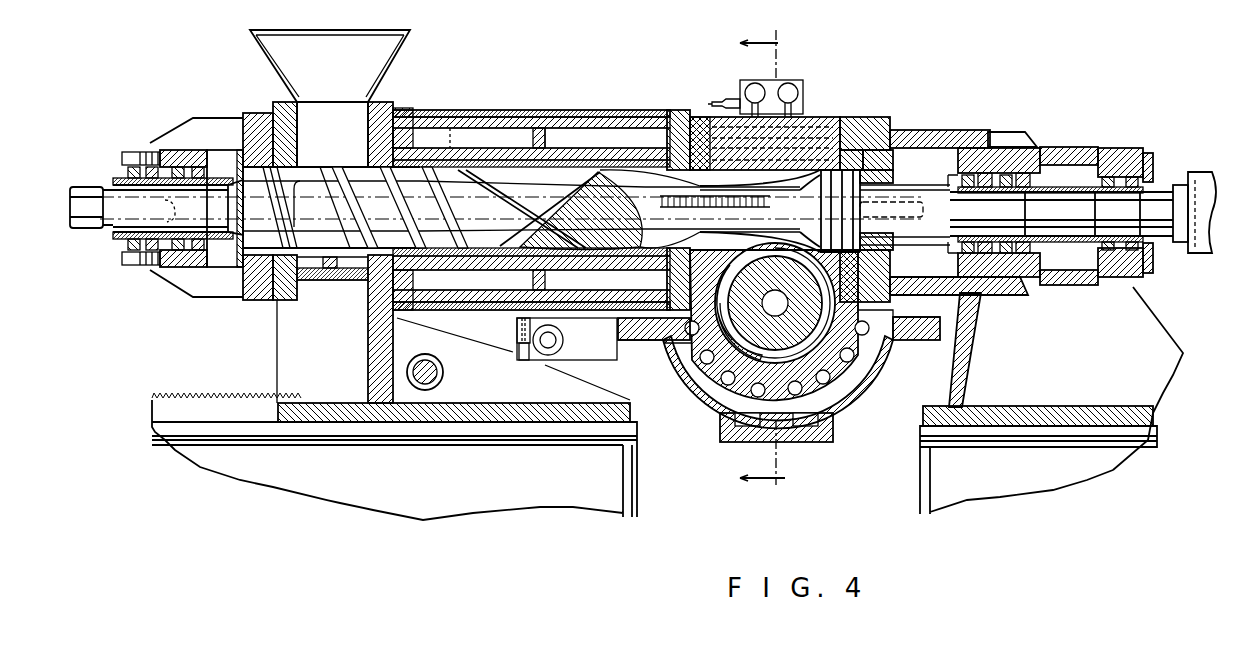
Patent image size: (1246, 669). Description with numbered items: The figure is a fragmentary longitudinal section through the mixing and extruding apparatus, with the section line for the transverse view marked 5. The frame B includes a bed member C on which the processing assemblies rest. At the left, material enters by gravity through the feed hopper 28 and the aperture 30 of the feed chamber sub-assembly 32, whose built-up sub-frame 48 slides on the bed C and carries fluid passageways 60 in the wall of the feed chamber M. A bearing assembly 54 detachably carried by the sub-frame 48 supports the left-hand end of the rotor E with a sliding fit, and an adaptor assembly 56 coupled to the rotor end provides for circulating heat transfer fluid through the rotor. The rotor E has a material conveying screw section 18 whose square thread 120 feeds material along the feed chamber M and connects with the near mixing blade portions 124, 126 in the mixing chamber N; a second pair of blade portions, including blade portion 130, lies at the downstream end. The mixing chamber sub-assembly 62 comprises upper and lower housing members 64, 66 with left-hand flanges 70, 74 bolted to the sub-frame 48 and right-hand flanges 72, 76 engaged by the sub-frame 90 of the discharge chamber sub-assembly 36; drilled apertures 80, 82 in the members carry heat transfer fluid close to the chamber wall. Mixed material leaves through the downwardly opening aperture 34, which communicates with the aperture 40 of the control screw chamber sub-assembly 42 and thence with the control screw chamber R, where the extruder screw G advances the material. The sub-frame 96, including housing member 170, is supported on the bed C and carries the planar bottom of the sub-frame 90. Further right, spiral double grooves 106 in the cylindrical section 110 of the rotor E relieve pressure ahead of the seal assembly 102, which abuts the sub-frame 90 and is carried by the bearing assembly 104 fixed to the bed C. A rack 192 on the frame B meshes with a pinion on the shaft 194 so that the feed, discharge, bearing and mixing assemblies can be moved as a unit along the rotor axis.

The feed hopper 28 is at (328, 30).
The aperture 30 is at (368, 125).
The feed chamber sub-assembly 32 is at (280, 98).
The bearing assembly 54 is at (150, 150).
The adaptor assembly 56 is at (90, 190).
The material conveying screw section 18 is at (322, 169).
The mixing blade portion 126 is at (366, 167).
The flange 74 is at (402, 110).
The drilled aperture 82 is at (450, 128).
The mixing chamber sub-assembly 62 is at (500, 106).
The lower housing member 66 is at (558, 140).
The mixing chamber N is at (612, 147).
The flange 76 is at (676, 109).
The discharge chamber sub-assembly 36 is at (810, 116).
The cylindrical section 110 is at (834, 163).
The sub-frame 90 is at (858, 118).
The seal assembly 102 is at (918, 133).
The bearing assembly 104 is at (1050, 147).
The spiral double grooves 106 is at (848, 193).
The rotor E is at (1011, 212).
The mixing blade portion 124 is at (503, 185).
The thread 120 is at (420, 198).
The mixing blade portion 130 is at (692, 209).
The aperture 34 is at (806, 228).
The fluid passageway 60 is at (309, 274).
The feed chamber M is at (358, 277).
The flange 72 is at (690, 273).
The aperture 40 is at (825, 259).
The control screw chamber R is at (838, 299).
The material conveying screw G is at (735, 345).
The drilled aperture 80 is at (447, 294).
The upper housing member 64 is at (504, 294).
The flange 70 is at (404, 311).
The sub-frame 48 is at (368, 358).
The shaft 194 is at (444, 373).
The rack 192 is at (208, 389).
The housing member 170 is at (704, 415).
The control screw chamber sub-assembly 42 is at (862, 414).
The sub-frame 96 is at (934, 316).
The frame B is at (912, 499).
The bed member C is at (555, 503).
The section line 5- 5 is at (762, 257).